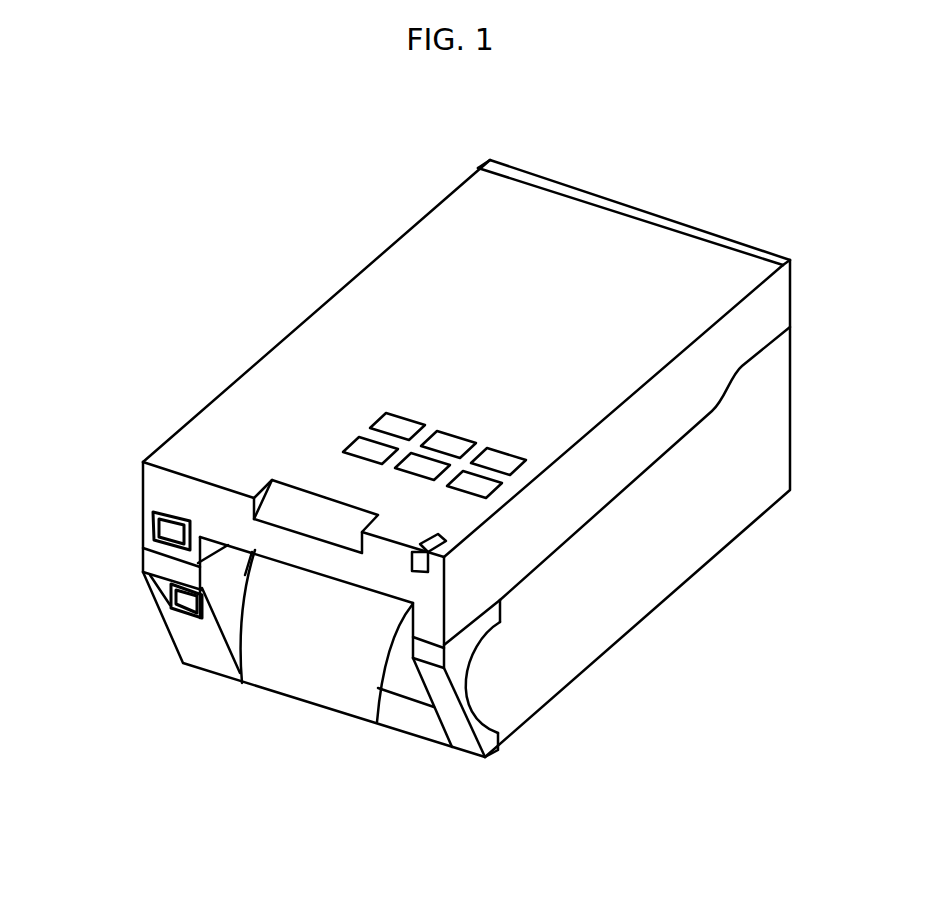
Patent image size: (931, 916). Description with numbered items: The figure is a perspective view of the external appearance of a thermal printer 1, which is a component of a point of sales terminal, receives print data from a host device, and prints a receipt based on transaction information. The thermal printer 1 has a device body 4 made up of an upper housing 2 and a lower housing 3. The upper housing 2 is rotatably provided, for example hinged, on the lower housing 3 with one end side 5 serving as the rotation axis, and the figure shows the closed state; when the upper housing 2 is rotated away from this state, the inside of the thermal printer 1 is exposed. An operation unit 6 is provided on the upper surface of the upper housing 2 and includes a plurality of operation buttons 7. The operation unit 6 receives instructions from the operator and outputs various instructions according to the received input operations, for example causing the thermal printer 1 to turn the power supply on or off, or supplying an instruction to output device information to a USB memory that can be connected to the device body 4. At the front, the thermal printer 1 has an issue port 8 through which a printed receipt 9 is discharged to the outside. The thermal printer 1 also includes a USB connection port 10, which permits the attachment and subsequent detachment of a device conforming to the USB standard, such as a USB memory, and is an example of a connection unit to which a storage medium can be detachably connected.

The thermal printer 1 is at (508, 146).
The upper housing 2 is at (415, 261).
The lower housing 3 is at (647, 570).
The device body 4 is at (262, 330).
The one end side 5 is at (478, 167).
The operation unit 6 is at (408, 404).
The operation buttons 7 is at (366, 447).
The issue port 8 is at (313, 614).
The receipt 9 is at (383, 663).
The USB connection port 10 is at (152, 517).